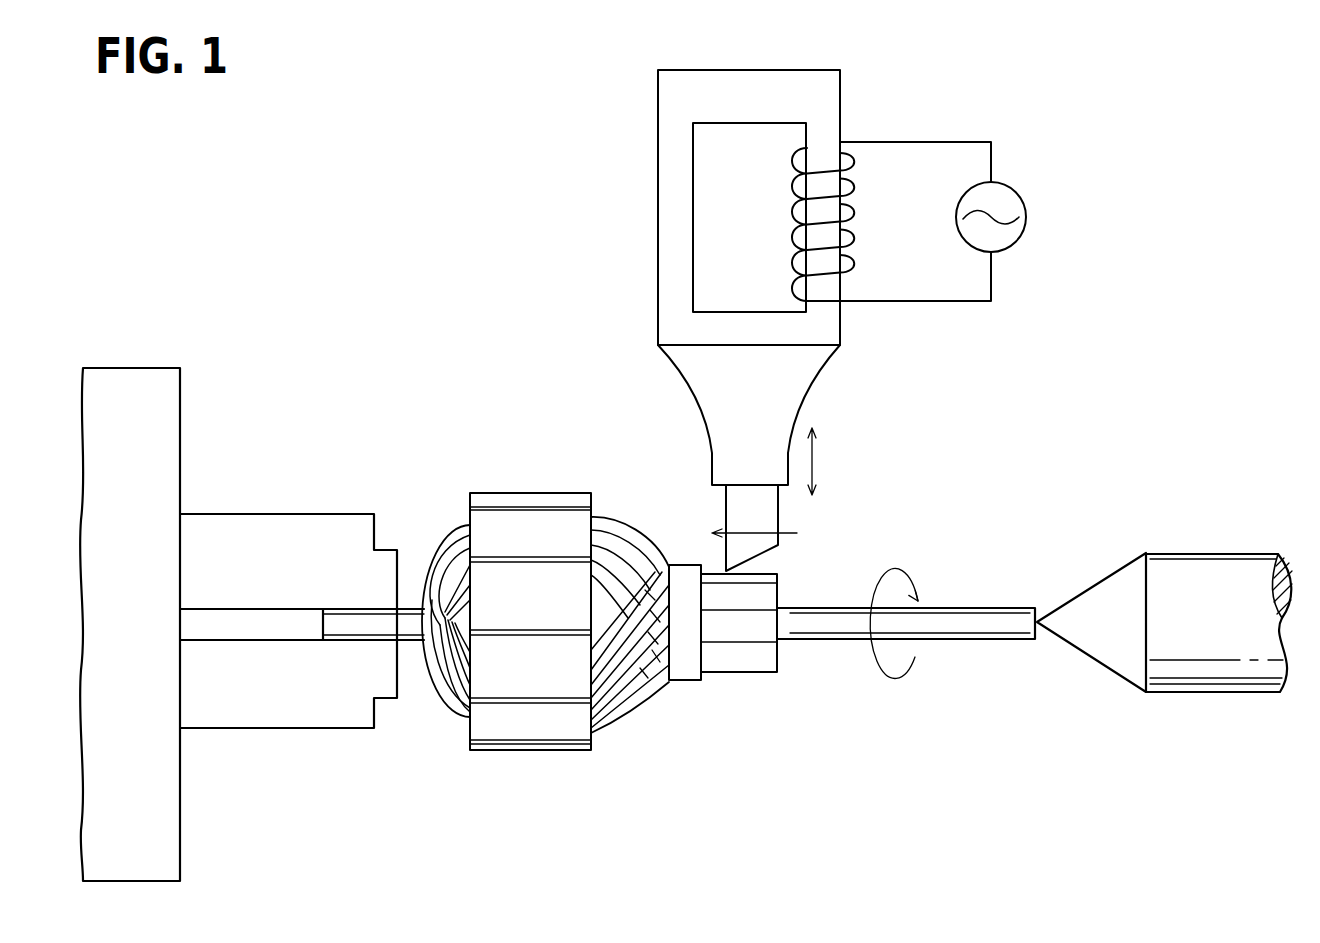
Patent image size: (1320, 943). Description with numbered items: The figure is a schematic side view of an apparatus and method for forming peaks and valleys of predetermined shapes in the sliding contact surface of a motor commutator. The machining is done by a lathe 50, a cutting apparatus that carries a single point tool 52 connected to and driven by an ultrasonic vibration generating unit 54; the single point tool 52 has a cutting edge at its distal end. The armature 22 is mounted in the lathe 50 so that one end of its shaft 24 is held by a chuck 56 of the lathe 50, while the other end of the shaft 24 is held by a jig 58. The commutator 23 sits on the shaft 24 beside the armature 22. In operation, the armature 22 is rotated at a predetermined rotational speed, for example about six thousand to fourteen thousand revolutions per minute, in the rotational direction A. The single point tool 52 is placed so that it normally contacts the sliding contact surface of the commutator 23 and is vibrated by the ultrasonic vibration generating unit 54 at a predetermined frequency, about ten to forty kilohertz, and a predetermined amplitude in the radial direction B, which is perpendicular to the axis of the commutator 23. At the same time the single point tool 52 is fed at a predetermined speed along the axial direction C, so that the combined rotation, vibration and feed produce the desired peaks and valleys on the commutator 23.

The lathe 50 is at (265, 428).
The chuck 56 is at (341, 514).
The armature 22 is at (517, 487).
The commutator 23 is at (742, 673).
The shaft 24 is at (820, 640).
The jig 58 is at (1100, 610).
The ultrasonic vibration generating unit 54 is at (658, 228).
The single point tool 52 is at (726, 505).
The rotational direction A is at (894, 599).
The radial direction B is at (820, 462).
The axial direction C is at (762, 528).